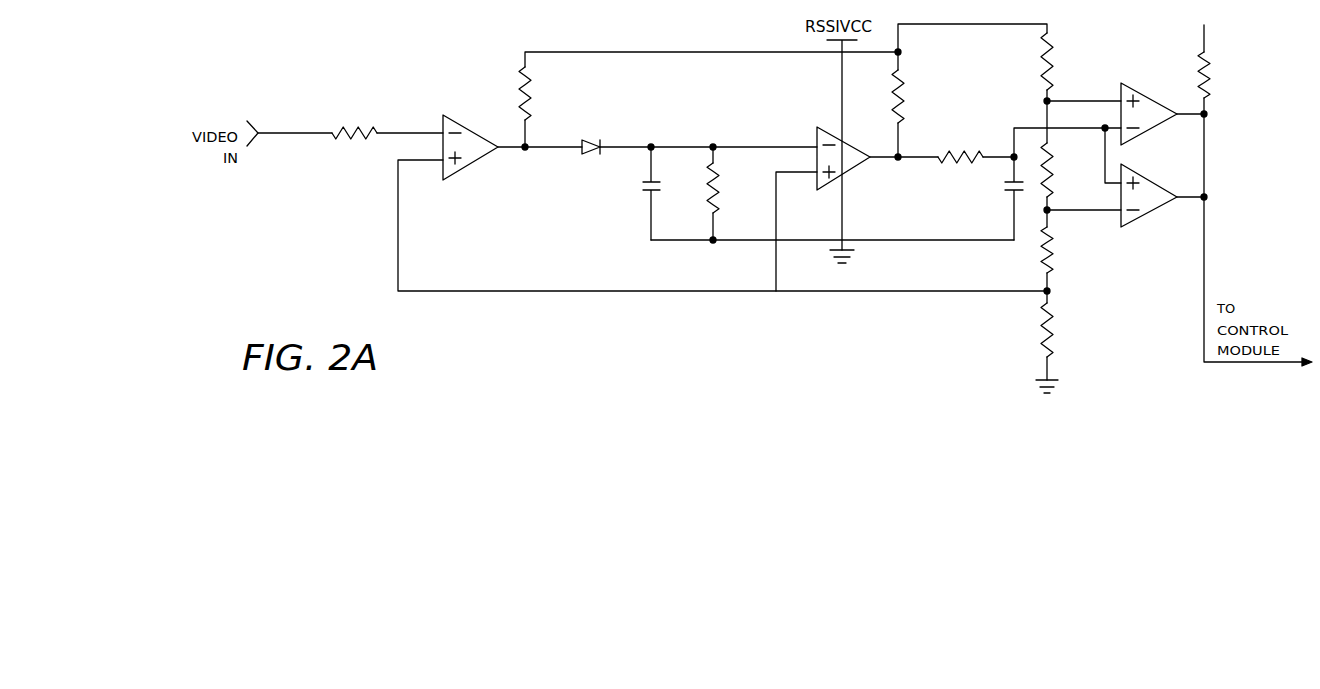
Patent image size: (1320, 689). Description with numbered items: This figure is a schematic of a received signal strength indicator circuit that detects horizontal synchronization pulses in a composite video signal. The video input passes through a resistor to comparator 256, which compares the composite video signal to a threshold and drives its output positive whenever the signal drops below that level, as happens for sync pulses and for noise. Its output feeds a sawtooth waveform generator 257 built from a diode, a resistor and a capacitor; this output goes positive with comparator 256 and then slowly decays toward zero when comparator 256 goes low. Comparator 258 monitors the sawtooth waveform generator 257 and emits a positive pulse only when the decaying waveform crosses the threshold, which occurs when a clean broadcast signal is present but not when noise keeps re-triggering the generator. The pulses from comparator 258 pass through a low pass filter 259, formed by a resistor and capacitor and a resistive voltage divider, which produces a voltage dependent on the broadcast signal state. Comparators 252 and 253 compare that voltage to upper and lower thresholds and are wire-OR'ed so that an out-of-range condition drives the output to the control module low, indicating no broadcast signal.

The comparator 252 is at (1153, 88).
The comparator 253 is at (1150, 222).
The comparator 256 is at (475, 172).
The sawtooth waveform generator 257 is at (704, 126).
The comparator 258 is at (865, 175).
The low pass filter 259 is at (986, 88).